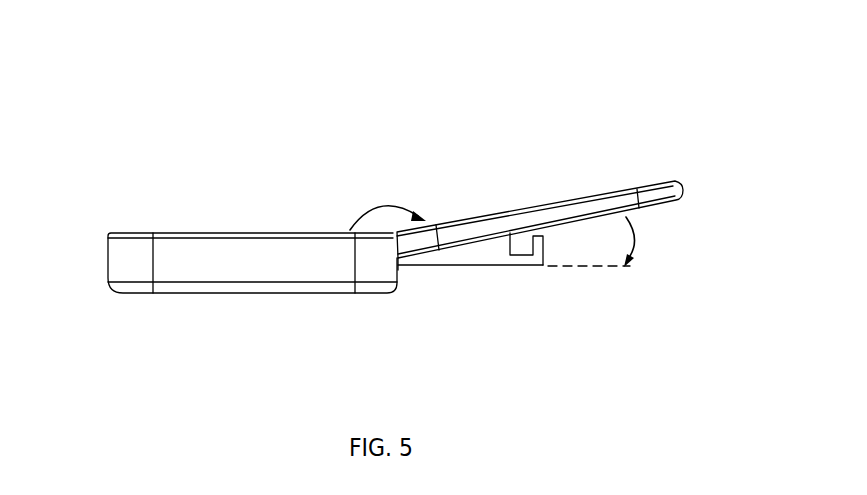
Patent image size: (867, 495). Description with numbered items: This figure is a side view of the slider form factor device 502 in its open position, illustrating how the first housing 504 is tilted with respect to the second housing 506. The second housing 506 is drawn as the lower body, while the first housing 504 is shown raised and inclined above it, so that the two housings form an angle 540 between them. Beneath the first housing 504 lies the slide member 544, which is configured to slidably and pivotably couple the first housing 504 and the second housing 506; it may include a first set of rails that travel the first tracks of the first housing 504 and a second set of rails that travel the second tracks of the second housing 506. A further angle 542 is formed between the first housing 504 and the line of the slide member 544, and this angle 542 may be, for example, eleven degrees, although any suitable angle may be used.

The slider form factor device 502 is at (546, 90).
The first housing 504 is at (545, 205).
The second housing 506 is at (108, 260).
The angle 540 is at (387, 212).
The angle 542 is at (635, 242).
The slide member 544 is at (467, 265).